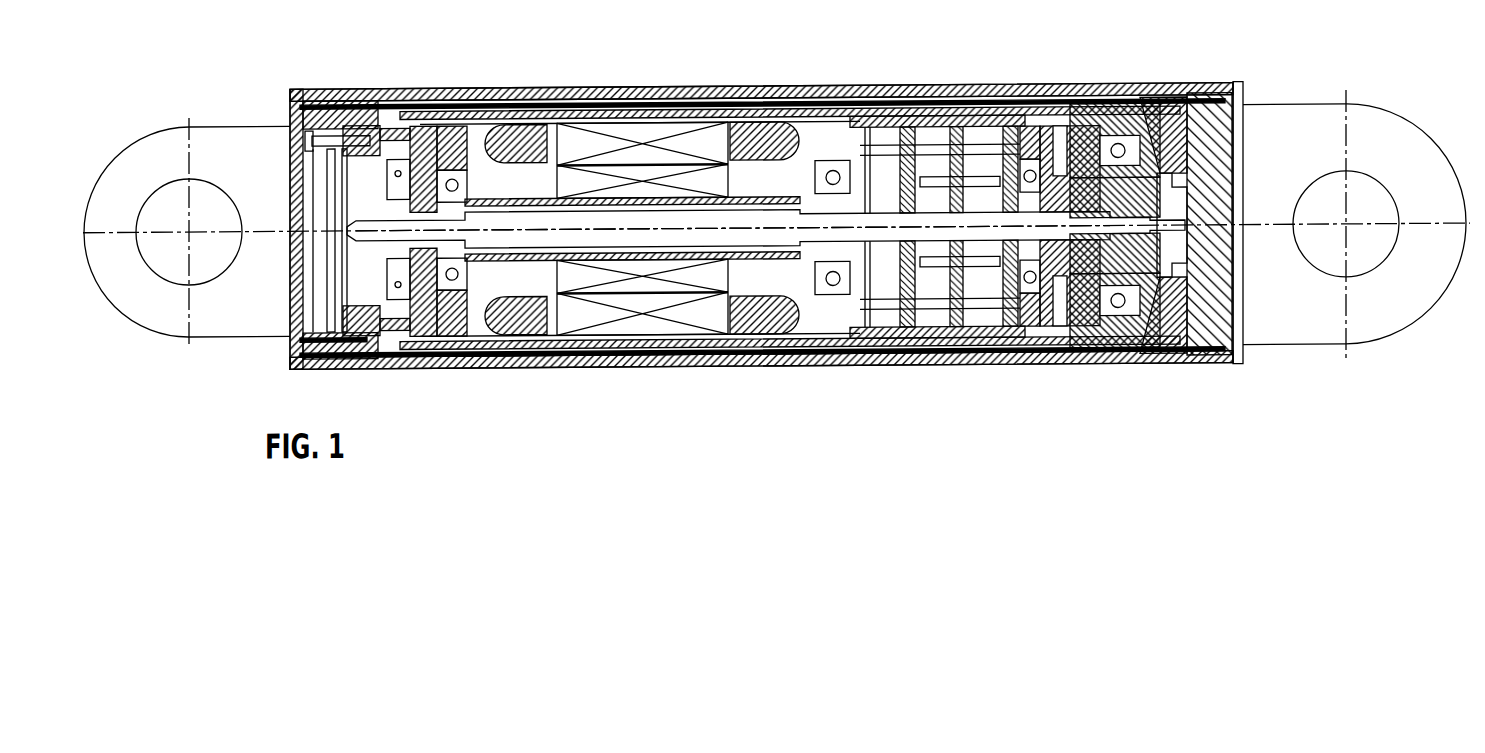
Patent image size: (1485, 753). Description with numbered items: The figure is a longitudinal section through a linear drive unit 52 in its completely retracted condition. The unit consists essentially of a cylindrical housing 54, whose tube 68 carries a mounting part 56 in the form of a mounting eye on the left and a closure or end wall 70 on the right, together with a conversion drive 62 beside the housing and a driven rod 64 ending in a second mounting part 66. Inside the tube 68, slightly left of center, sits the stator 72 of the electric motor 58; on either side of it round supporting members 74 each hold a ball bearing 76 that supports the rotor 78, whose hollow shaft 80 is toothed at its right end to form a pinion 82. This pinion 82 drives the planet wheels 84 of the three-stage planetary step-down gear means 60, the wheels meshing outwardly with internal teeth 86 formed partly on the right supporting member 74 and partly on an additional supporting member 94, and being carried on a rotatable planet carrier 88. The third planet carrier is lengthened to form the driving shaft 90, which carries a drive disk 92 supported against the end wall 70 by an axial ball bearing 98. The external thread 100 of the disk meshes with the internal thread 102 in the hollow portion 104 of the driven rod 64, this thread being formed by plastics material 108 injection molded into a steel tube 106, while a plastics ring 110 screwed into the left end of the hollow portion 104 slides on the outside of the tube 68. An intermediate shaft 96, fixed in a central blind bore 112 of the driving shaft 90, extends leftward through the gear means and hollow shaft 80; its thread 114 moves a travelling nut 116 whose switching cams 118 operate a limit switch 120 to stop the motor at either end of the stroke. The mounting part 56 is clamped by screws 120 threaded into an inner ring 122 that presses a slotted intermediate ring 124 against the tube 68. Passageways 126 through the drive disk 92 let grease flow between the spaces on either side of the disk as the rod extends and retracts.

The linear drive unit 52 is at (751, 86).
The housing 54 is at (528, 96).
The mounting part 56 is at (236, 340).
The electric motor 58 is at (780, 130).
The three-stage planetary step-down gear means 60 is at (968, 130).
The conversion drive 62 is at (1158, 104).
The driven rod 64 is at (1242, 88).
The mounting part 66 is at (1316, 354).
The tube 68 is at (640, 335).
The end wall 70 is at (1090, 354).
The stator 72 is at (735, 330).
The supporting members 74 is at (440, 338).
The ball bearing 76 is at (460, 300).
The rotor 78 is at (627, 170).
The hollow shaft 80 is at (770, 262).
The pinion 82 is at (866, 121).
The planet wheels 84 is at (885, 322).
The internal teeth 86 is at (906, 132).
The planet carrier 88 is at (955, 132).
The driving shaft 90 is at (1060, 332).
The drive disk 92 is at (1170, 284).
The supporting member 94 is at (1028, 165).
The intermediate shaft 96 is at (985, 272).
The axial ball bearing 98 is at (1118, 148).
The thread 100 is at (1130, 354).
The internal thread 102 is at (1035, 132).
The hollow portion 104 is at (688, 106).
The steel tube 106 is at (460, 113).
The plastics material 108 is at (345, 137).
The plastics ring 110 is at (296, 100).
The central blind bore 112 is at (1060, 134).
The thread 114 is at (350, 228).
The travelling nut 116 is at (425, 337).
The switching cams 118 is at (330, 245).
The limit switch 120 is at (395, 130).
The inner ring 122 is at (392, 170).
The intermediate ring 124 is at (310, 340).
The passageways 126 is at (1205, 362).